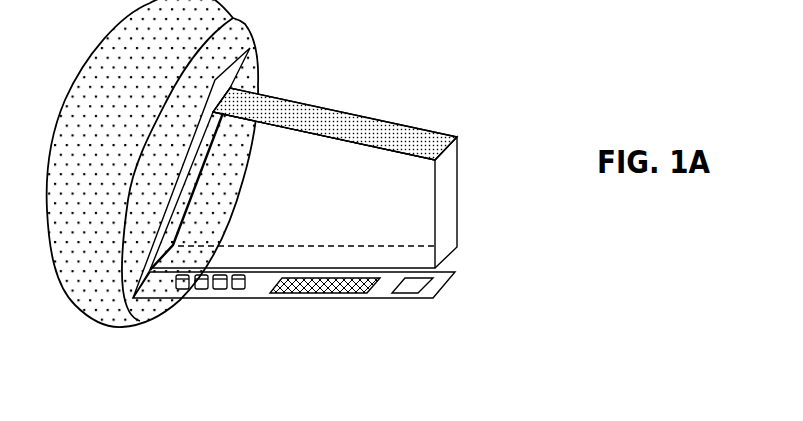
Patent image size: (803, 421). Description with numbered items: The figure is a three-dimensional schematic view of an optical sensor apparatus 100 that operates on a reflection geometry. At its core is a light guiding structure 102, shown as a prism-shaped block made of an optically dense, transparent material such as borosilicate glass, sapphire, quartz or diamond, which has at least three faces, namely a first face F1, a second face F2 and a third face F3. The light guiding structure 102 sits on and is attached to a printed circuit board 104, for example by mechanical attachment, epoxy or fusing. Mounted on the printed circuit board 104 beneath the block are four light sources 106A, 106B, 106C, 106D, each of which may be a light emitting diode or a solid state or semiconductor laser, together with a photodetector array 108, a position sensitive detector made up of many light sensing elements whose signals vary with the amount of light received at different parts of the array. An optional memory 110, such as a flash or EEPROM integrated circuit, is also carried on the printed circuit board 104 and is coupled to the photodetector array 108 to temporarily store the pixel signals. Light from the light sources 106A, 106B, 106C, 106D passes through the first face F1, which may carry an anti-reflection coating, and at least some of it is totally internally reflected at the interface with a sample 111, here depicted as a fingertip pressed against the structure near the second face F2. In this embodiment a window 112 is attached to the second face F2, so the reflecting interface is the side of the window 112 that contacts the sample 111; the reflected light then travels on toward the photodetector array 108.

The optical sensor apparatus 100 is at (416, 77).
The light guiding structure 102 is at (343, 179).
The printed circuit board 104 is at (444, 298).
The light source 106A is at (182, 289).
The light source 106B is at (201, 289).
The light source 106C is at (220, 289).
The light source 106D is at (239, 289).
The photodetector array 108 is at (330, 283).
The memory 110 is at (420, 287).
The sample 111 is at (137, 121).
The window 112 is at (230, 75).
The first face F1 is at (333, 261).
The second face F2 is at (199, 172).
The third face F3 is at (321, 136).